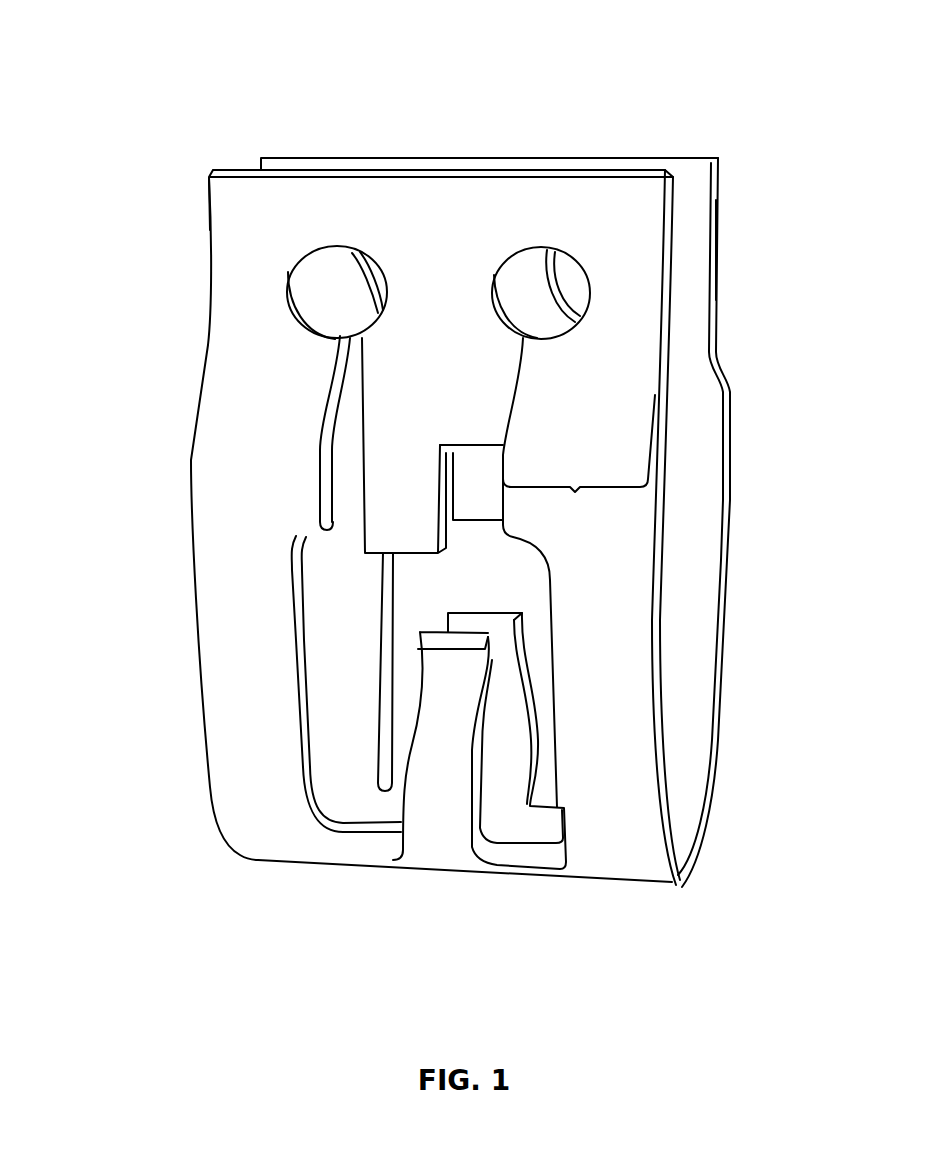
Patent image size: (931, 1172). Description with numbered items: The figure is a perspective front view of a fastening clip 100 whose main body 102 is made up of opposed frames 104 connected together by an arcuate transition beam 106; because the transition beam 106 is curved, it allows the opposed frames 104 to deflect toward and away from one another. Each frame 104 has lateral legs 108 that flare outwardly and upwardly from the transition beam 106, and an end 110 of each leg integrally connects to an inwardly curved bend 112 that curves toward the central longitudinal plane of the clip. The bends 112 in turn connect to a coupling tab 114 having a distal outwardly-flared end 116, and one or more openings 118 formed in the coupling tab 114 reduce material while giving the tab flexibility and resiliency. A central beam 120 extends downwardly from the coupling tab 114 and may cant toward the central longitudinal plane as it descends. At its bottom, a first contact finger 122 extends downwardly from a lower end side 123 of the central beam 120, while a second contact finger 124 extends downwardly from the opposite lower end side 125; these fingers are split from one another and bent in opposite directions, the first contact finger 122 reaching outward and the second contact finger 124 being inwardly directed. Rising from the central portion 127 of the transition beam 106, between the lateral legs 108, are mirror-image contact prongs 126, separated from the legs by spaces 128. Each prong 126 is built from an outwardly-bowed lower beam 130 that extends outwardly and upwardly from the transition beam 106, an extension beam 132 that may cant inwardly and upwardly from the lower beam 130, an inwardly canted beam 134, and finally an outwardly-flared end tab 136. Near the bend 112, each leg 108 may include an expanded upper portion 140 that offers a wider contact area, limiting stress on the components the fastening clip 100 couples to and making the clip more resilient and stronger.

The fastening clip 100 is at (140, 100).
The main body 102 is at (183, 521).
The frame 104 is at (720, 640).
The transition beam 106 is at (653, 885).
The lateral leg 108 is at (390, 612).
The end of leg 110 is at (200, 408).
The bend 112 is at (660, 406).
The coupling tab 114 is at (214, 300).
The distal outwardly-flared end 116 is at (214, 204).
The opening 118 is at (331, 272).
The central beam 120 is at (430, 383).
The first contact finger 122 is at (385, 490).
The lower end side 123 is at (398, 438).
The second contact finger 124 is at (483, 522).
The opposite lower end side 125 is at (477, 439).
The contact prong 126 is at (427, 728).
The central portion 127 is at (492, 820).
The space 128 is at (423, 728).
The lower beam 130 is at (443, 850).
The extension beam 132 is at (425, 808).
The inwardly canted beam 134 is at (423, 783).
The end tab 136 is at (428, 663).
The expanded upper portion 140 is at (575, 487).